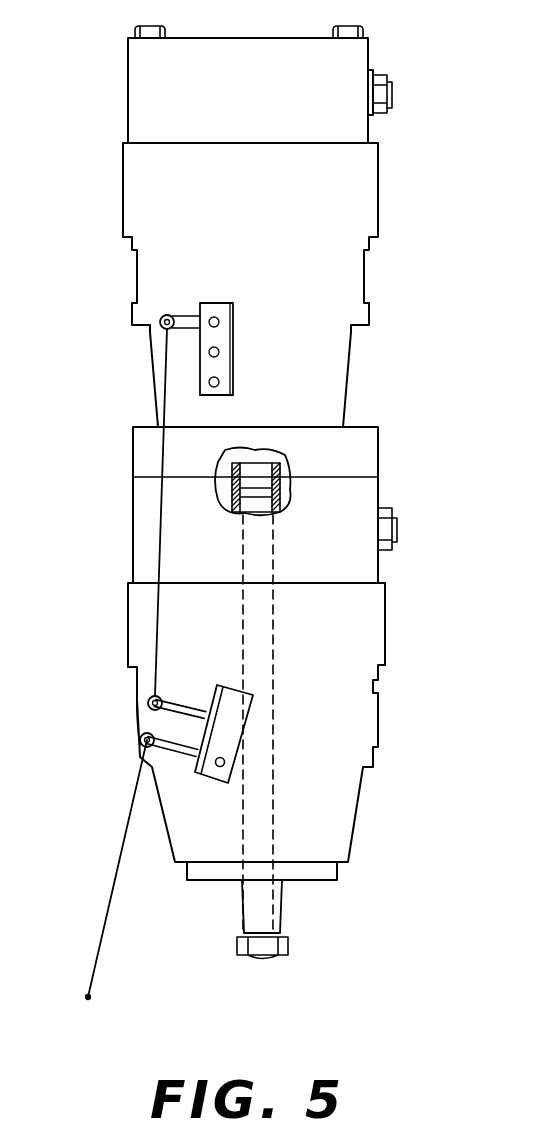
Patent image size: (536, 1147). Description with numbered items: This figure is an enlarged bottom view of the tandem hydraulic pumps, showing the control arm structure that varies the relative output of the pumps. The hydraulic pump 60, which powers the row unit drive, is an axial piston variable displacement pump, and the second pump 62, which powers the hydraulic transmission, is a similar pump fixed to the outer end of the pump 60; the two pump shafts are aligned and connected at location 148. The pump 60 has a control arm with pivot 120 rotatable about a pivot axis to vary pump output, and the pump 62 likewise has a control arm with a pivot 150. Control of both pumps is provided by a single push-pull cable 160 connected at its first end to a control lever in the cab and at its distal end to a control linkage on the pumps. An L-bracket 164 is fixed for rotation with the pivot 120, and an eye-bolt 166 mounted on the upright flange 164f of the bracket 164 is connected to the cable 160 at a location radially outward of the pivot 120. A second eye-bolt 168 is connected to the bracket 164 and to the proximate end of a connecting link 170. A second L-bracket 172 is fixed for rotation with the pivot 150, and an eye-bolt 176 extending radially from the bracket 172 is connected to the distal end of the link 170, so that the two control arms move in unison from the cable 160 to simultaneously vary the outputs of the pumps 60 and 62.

The hydraulic pump 60 is at (386, 604).
The second pump 62 is at (379, 184).
The control arm pivot 120 is at (225, 760).
The pump shaft connection location 148 is at (283, 464).
The control arm pivot 150 is at (216, 320).
The push-pull cable 160 is at (104, 928).
The L-bracket 164 is at (227, 687).
The upright flange 164f is at (210, 697).
The eye-bolt 166 is at (177, 758).
The second eye-bolt 168 is at (175, 710).
The connecting link 170 is at (162, 530).
The second L-bracket 172 is at (217, 394).
The eye-bolt 176 is at (188, 317).